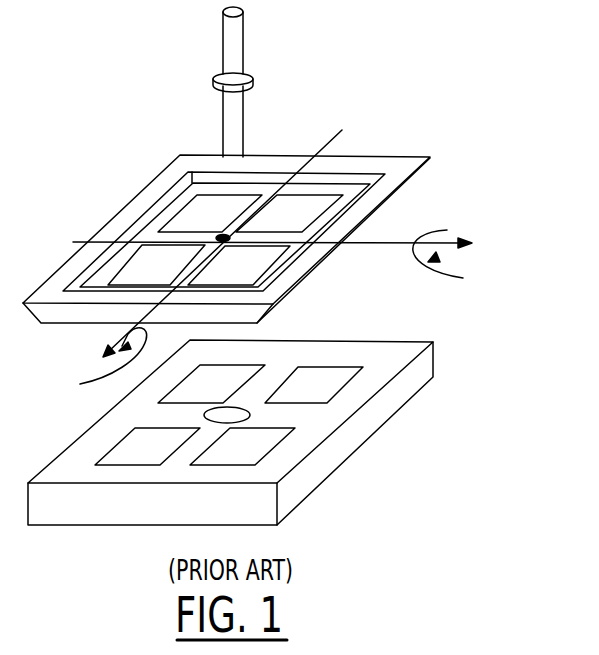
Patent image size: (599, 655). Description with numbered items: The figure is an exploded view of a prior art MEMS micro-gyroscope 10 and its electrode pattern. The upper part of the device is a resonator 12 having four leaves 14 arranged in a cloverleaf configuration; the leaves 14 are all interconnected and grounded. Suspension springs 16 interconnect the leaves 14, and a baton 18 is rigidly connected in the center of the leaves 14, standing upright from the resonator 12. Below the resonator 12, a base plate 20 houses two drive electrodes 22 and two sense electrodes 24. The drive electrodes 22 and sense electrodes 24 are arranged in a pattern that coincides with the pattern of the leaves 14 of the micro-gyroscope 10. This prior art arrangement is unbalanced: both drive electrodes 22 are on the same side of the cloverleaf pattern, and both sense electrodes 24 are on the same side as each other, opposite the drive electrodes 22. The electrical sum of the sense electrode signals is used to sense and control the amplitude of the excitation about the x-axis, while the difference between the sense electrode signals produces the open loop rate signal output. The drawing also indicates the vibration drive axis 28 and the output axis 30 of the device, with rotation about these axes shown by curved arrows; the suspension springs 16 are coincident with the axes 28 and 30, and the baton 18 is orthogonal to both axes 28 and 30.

The prior art MEMS micro-gyroscope 10 is at (480, 53).
The resonator 12 is at (408, 139).
The leaves 14 is at (142, 267).
The suspension springs 16 is at (101, 237).
The baton 18 is at (245, 52).
The base plate 20 is at (436, 374).
The drive electrodes 22 is at (140, 435).
The sense electrodes 24 is at (272, 443).
The vibration drive axis 28 is at (186, 267).
The output axis 30 is at (463, 278).